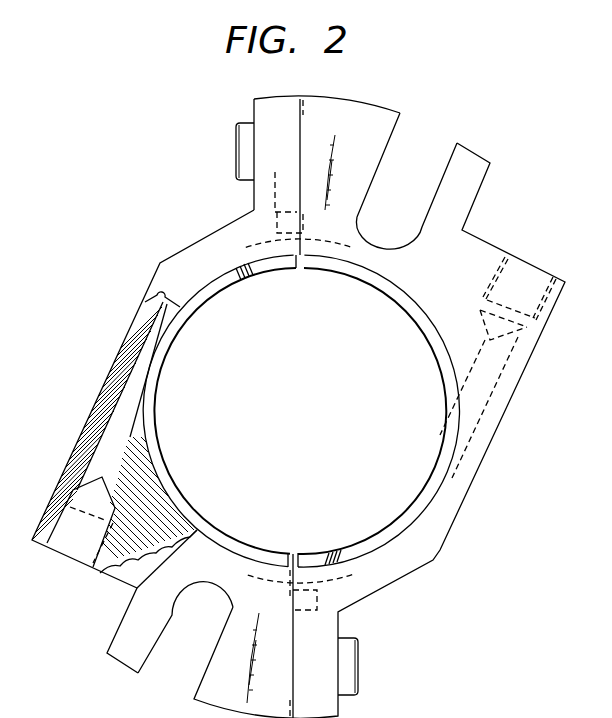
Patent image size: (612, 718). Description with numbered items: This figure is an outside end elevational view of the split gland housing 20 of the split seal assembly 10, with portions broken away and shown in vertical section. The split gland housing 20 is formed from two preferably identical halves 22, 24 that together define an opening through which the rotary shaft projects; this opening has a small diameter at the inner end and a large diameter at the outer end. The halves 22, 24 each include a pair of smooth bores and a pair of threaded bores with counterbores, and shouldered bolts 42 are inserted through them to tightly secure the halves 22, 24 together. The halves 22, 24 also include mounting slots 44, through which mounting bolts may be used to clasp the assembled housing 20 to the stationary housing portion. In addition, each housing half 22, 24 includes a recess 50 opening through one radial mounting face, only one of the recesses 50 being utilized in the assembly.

The split seal assembly 10 is at (233, 215).
The split gland housing 20 is at (383, 108).
The housing half 22 is at (327, 100).
The housing half 24 is at (283, 97).
The shouldered bolt 42 is at (245, 137).
The mounting slot 44 is at (427, 213).
The recess 50 is at (396, 603).